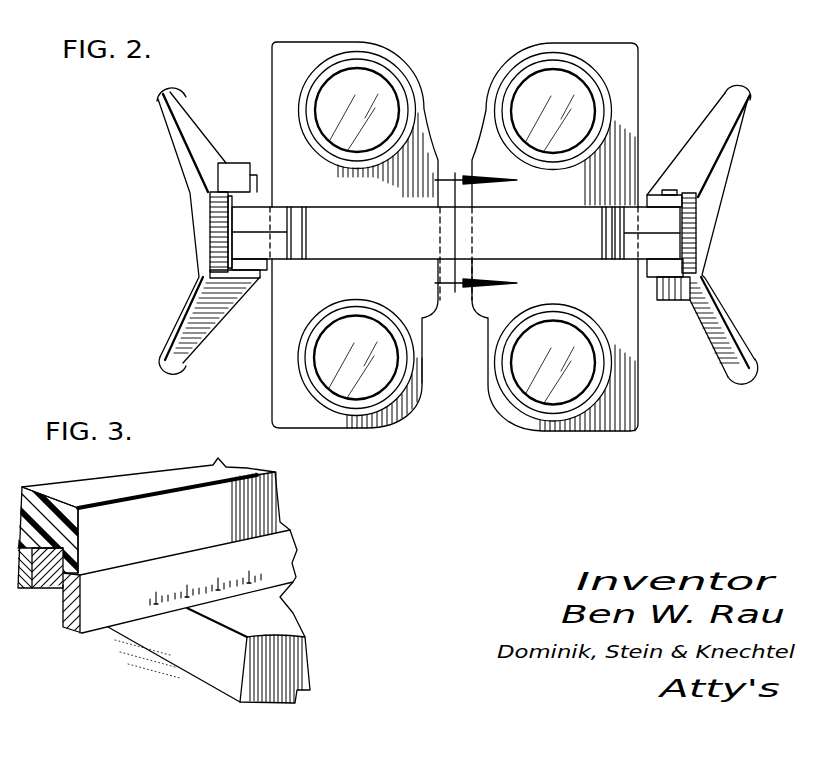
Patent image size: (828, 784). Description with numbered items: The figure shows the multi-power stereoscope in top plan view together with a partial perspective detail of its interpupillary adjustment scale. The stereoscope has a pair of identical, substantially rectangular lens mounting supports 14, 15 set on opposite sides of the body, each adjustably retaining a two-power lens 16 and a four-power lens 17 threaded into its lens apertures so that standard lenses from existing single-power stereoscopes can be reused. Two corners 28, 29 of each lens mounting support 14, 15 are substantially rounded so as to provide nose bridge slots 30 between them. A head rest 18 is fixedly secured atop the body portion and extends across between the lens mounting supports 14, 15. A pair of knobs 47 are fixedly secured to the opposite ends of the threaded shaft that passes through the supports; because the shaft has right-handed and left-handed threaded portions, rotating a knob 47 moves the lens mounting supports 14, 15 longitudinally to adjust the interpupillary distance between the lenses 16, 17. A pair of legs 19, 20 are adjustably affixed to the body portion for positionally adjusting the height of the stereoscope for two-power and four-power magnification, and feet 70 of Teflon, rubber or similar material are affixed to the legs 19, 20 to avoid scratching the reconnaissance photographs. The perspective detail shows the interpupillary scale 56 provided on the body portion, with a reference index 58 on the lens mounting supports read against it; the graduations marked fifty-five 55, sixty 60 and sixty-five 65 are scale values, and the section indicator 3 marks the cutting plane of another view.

In FIG. 2, the lens mounting support 14 is at (270, 43).
In FIG. 2, the lens mounting support 15 is at (642, 60).
In FIG. 2, the two-power lens 16 is at (372, 65).
In FIG. 2, the four-power lens 17 is at (363, 415).
In FIG. 2, the corner 29 is at (403, 63).
In FIG. 2, the corner 28 is at (405, 420).
In FIG. 2, the nose bridge slot 30 is at (455, 110).
In FIG. 2, the section line indicator 3 is at (467, 233).
In FIG. 2, the head rest 18 is at (400, 238).
In FIG. 3, the head rest 18 is at (157, 475).
In FIG. 2, the knob 47 is at (212, 222).
In FIG. 2, the leg 19 is at (170, 128).
In FIG. 2, the leg 20 is at (678, 158).
In FIG. 2, the foot 70 is at (158, 100).
In FIG. 3, the foot 70 is at (244, 572).
In FIG. 3, the interpupillary scale 56 is at (199, 581).
In FIG. 3, the reference index 58 is at (190, 610).
In FIG. 3, the scale graduation 55 is at (155, 592).
In FIG. 3, the scale graduation 60 is at (187, 586).
In FIG. 3, the scale graduation 65 is at (214, 578).